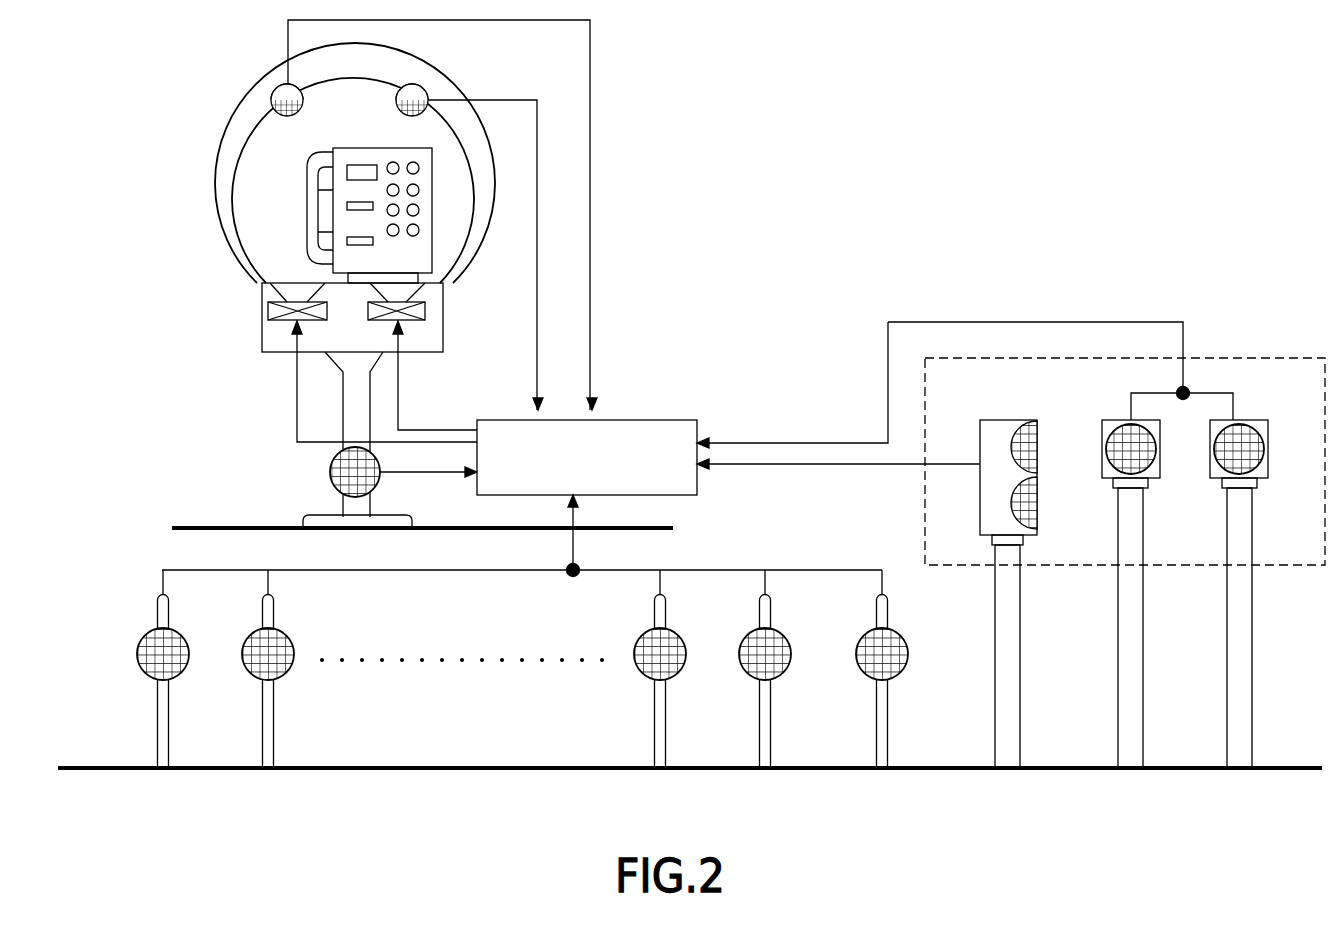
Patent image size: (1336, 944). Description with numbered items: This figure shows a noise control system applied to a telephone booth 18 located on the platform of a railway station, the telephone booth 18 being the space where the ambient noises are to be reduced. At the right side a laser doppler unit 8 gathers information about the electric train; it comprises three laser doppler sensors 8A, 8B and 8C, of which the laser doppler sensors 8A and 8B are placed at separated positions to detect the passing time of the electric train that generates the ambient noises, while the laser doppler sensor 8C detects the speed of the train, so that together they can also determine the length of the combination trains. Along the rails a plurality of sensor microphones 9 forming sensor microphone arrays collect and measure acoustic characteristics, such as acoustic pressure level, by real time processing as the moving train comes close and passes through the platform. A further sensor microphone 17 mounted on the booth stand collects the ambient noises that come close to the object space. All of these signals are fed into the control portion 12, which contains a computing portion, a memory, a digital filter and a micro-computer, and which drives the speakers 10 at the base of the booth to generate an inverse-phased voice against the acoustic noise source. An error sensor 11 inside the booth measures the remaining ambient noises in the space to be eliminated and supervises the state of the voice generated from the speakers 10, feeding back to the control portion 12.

The laser doppler unit 8 is at (1225, 358).
The laser doppler sensor 8A is at (1247, 420).
The laser doppler sensor 8B is at (1120, 420).
The laser doppler sensor 8C is at (1012, 420).
The sensor microphone arrays 9 is at (907, 645).
The speakers 10 is at (262, 290).
The error sensor 11 is at (417, 85).
The control portion 12 is at (627, 420).
The sensor microphones 17 is at (330, 468).
The telephone booth 18 is at (252, 88).